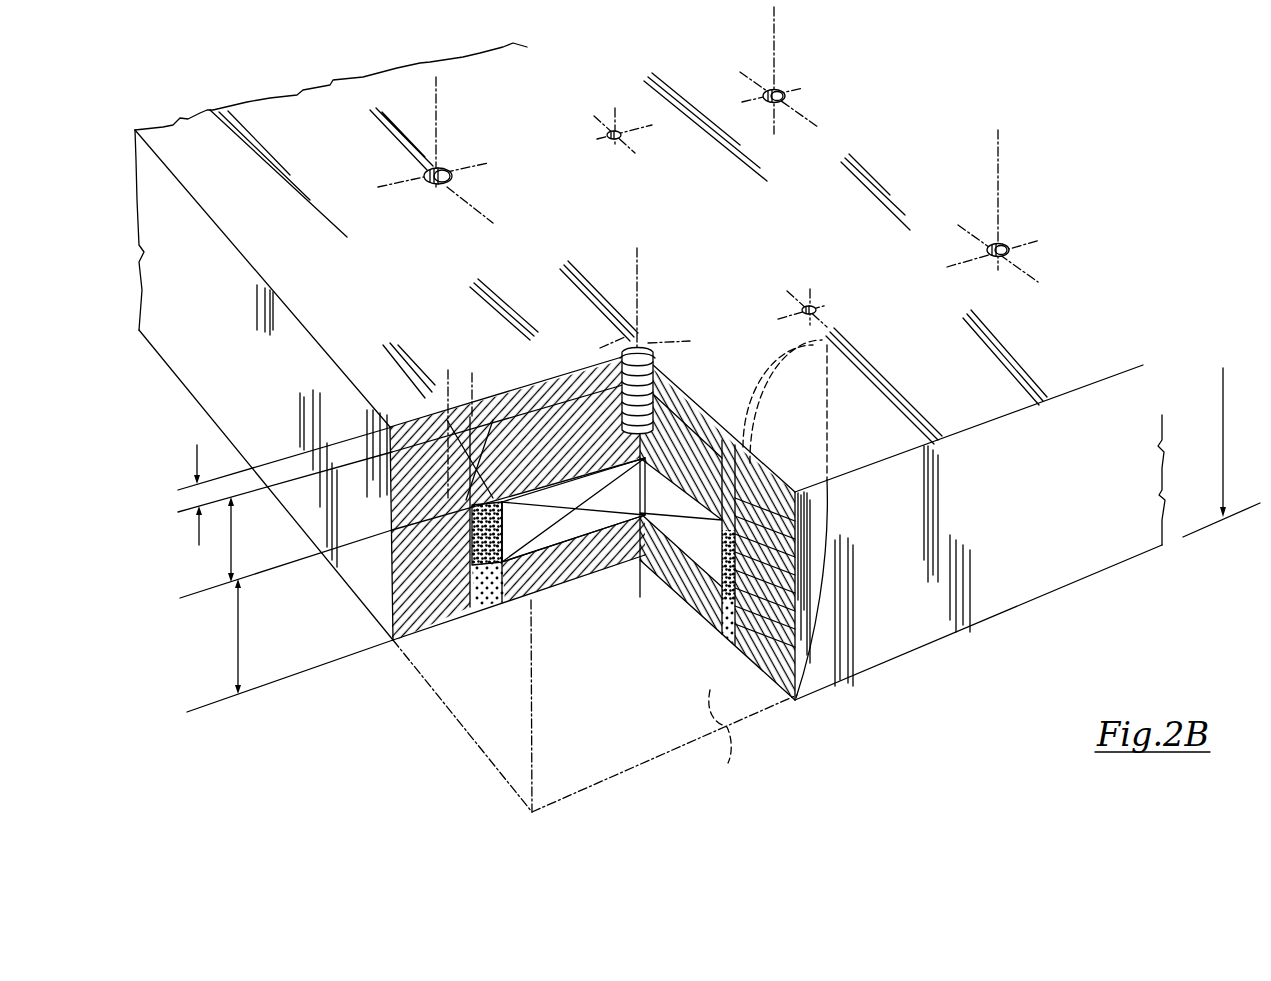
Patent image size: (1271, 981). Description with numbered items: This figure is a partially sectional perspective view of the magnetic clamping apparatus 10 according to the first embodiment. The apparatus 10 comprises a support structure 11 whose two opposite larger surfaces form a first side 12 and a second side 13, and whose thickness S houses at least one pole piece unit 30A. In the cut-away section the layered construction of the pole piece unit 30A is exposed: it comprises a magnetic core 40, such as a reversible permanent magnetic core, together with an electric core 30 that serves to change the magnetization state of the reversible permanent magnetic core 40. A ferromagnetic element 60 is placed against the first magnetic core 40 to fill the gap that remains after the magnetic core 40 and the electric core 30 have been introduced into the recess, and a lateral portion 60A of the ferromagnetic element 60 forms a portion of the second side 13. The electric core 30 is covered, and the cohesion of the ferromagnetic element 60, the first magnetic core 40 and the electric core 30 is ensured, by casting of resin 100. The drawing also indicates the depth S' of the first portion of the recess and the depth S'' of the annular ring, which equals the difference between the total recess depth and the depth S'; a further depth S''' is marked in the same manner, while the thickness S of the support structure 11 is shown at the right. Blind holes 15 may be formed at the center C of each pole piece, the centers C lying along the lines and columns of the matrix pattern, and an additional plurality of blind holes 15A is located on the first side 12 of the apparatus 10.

The magnetic clamping apparatus 10 is at (1122, 120).
The support structure 11 is at (1075, 545).
The first side 12 is at (1108, 336).
The second side 13 is at (768, 566).
The blind holes 15 is at (612, 347).
The additional blind holes 15A is at (609, 115).
The electric core 30 is at (492, 603).
The pole piece unit 30A is at (677, 702).
The magnetic core 40 is at (577, 528).
The ferromagnetic element 60 is at (520, 597).
The lateral portion 60A is at (553, 588).
The resin 100 is at (480, 608).
The center C is at (648, 345).
The thickness S is at (1223, 452).
The depth of the first portion of the recess S' is at (290, 645).
The depth of the annular ring S'' is at (286, 547).
The third layer thickness S''' is at (264, 486).